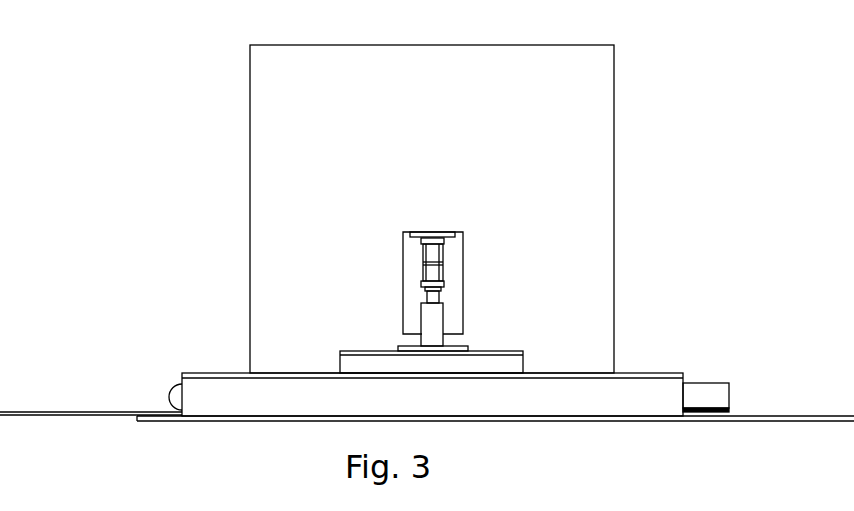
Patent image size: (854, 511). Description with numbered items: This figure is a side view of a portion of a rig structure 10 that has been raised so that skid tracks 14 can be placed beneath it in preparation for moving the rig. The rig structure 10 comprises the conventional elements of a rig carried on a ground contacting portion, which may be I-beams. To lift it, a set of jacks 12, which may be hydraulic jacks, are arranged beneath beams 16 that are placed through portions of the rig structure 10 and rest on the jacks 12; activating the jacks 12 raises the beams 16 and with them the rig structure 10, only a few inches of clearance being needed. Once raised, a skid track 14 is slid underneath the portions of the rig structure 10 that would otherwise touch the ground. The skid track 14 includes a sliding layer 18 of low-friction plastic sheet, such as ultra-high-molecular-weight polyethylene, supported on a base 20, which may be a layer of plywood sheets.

The rig structure 10 is at (595, 121).
The jacks 12 is at (428, 323).
The skid tracks 14 is at (134, 421).
The beams 16 is at (432, 252).
The sliding layer 18 is at (61, 412).
The base 20 is at (168, 421).